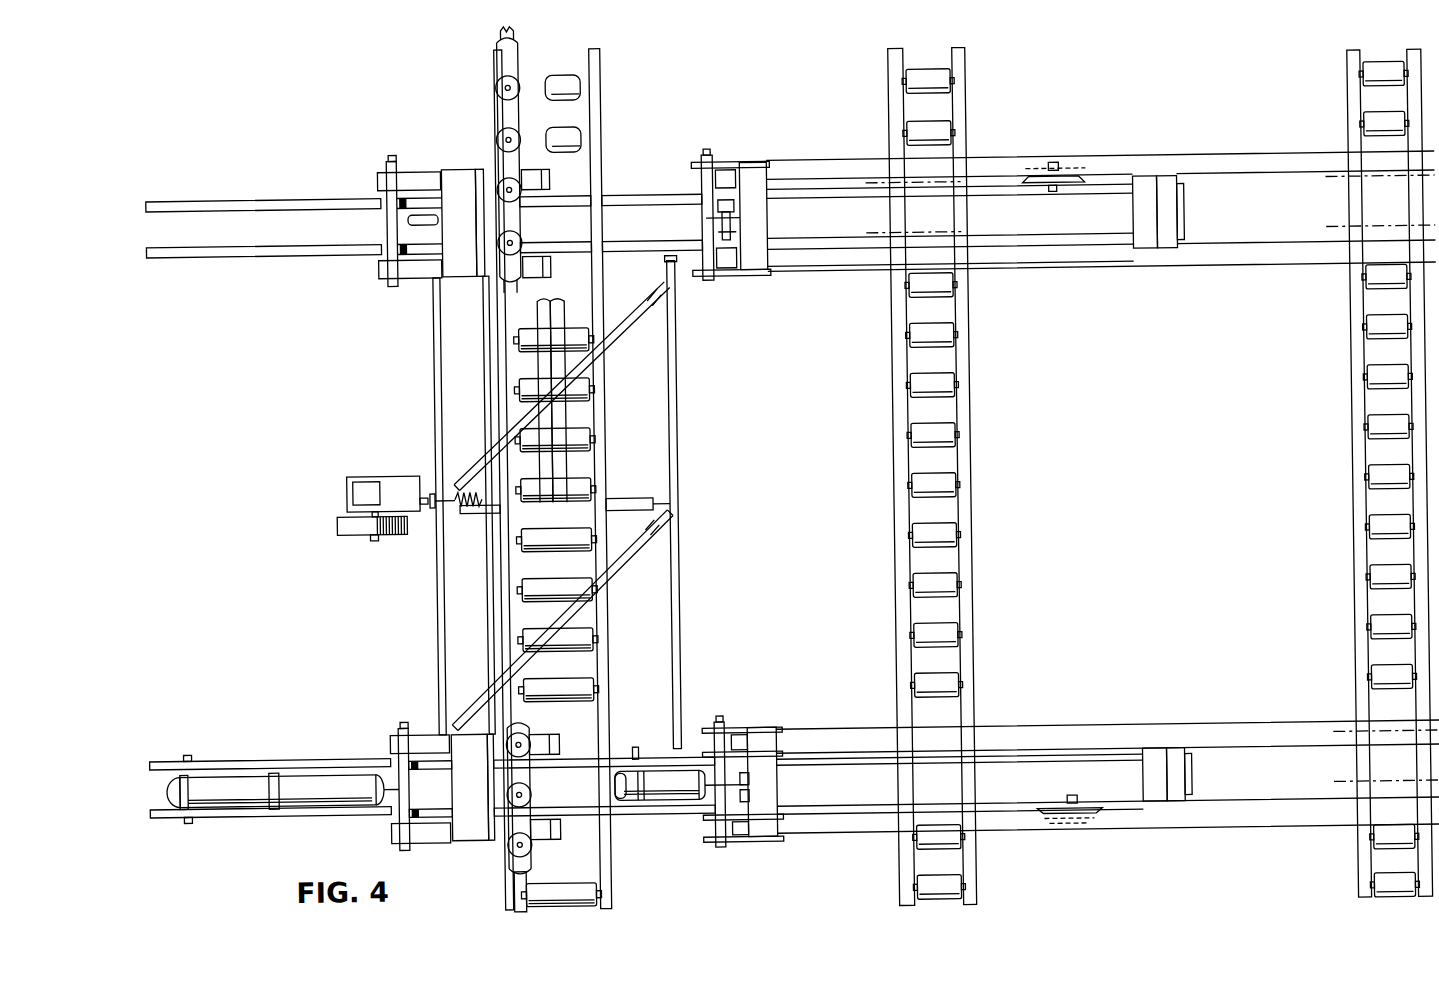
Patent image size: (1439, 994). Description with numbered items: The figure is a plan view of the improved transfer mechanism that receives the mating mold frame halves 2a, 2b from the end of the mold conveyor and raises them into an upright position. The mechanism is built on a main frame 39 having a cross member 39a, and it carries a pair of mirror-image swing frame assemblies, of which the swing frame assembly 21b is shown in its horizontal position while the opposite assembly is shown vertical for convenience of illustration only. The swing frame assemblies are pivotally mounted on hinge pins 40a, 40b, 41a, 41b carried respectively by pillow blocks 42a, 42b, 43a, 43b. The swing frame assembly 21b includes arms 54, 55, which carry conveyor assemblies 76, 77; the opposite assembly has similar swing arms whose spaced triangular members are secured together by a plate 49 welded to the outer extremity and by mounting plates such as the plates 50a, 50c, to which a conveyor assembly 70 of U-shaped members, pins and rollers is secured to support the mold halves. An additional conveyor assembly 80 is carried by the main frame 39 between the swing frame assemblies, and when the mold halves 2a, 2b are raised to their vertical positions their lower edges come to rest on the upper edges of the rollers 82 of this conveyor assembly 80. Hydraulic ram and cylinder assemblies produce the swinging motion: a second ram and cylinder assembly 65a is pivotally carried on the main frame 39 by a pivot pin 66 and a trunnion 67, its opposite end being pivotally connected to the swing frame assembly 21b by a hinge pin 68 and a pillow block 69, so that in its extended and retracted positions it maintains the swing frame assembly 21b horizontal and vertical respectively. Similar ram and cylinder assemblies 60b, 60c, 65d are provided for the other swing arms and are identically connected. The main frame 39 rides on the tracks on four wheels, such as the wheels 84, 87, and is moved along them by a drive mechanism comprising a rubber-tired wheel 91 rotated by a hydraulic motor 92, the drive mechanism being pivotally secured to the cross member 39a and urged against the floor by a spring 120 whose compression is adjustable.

The mold frame half 2a is at (558, 308).
The mold frame half 2b is at (548, 310).
The swing frame assembly 21b is at (1251, 148).
The main frame 39 is at (1012, 816).
The cross member 39a is at (437, 586).
The hinge pin 40a is at (401, 721).
The hinge pin 40b is at (394, 284).
The hinge pin 41a is at (721, 722).
The hinge pin 41b is at (712, 282).
The pillow block 42a is at (386, 806).
The pillow block 42b is at (368, 252).
The pillow block 43a is at (697, 770).
The cross beam 43b is at (690, 246).
The plate 49 is at (481, 794).
The mounting plate 50a is at (497, 836).
The plate 50c is at (485, 170).
The arm 54 is at (1065, 720).
The arm 55 is at (1055, 282).
The ram and cylinder assembly 60b is at (252, 800).
The ram and cylinder assembly 60c is at (420, 211).
The second ram and cylinder assembly 65a is at (657, 800).
The ram and cylinder assembly 65d is at (733, 212).
The pivot pin 66 is at (631, 748).
The trunnion 67 is at (620, 800).
The hinge pin 68 is at (755, 805).
The pillow block 69 is at (748, 782).
The conveyor assembly 70 is at (524, 76).
The conveyor assembly 76 is at (971, 461).
The conveyor assembly 77 is at (1353, 456).
The conveyor assembly 80 is at (564, 479).
The rollers 82 is at (589, 442).
The wheel 84 is at (1084, 835).
The wheel 87 is at (1068, 172).
The rubber-tired wheel 91 is at (350, 531).
The hydraulic motor 92 is at (373, 478).
The spring 120 is at (456, 490).